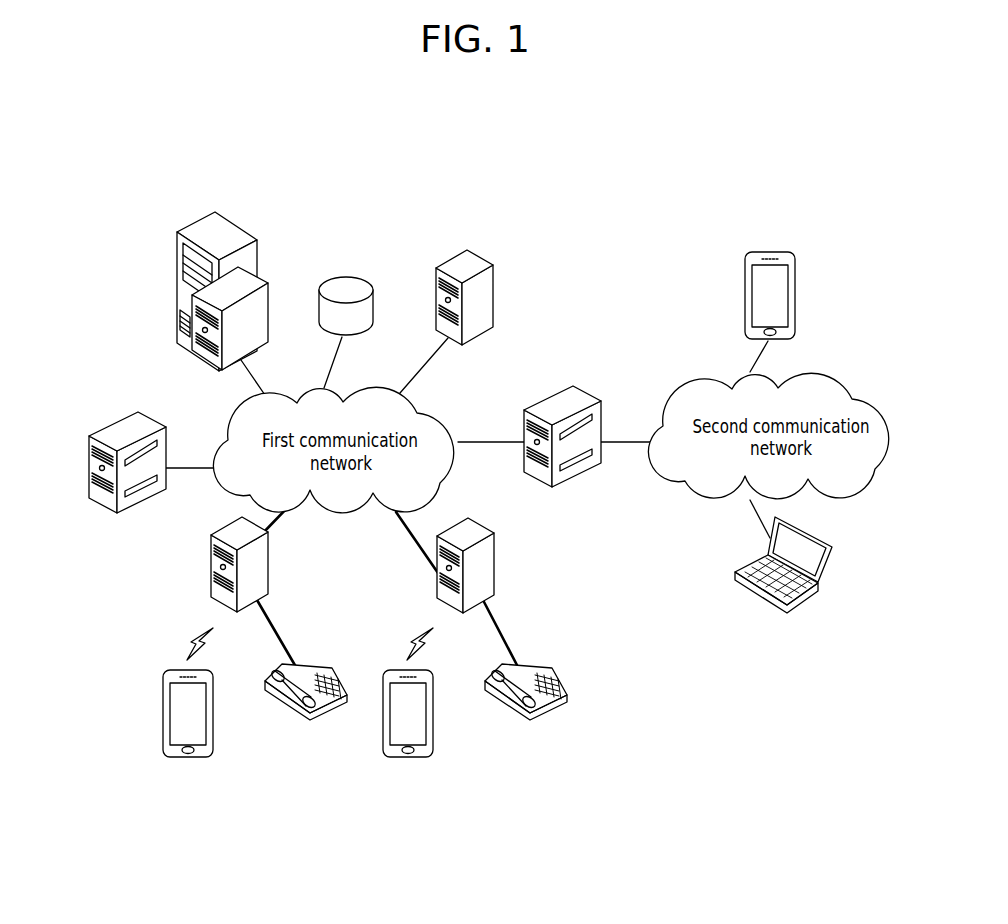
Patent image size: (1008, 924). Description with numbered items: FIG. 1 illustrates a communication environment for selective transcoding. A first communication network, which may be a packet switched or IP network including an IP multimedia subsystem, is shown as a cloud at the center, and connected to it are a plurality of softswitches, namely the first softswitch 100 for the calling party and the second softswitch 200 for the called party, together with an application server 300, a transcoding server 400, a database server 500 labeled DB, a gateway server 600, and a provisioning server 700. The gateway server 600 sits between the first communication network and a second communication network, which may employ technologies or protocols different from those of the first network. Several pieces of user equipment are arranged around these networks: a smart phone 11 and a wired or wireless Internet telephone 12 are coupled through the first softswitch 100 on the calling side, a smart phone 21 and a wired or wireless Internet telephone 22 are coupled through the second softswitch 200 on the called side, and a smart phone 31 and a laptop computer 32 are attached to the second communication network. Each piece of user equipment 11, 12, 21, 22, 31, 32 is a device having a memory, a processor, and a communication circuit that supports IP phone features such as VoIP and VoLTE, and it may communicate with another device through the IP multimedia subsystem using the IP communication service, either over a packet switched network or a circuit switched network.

The first softswitch 100 is at (272, 577).
The second softswitch 200 is at (483, 522).
The application server 300 is at (232, 222).
The transcoding server 400 is at (475, 253).
The database (DB) server 500 is at (357, 278).
The gateway server 600 is at (587, 385).
The provisioning server 700 is at (145, 413).
The user equipment (smart phone) 11 is at (188, 757).
The user equipment (wired/wireless Internet telephone) 12 is at (300, 716).
The user equipment (smart phone) 21 is at (408, 757).
The user equipment (wired/wireless Internet telephone) 22 is at (520, 716).
The user equipment (smart phone) 31 is at (763, 252).
The user equipment (laptop computer) 32 is at (810, 532).